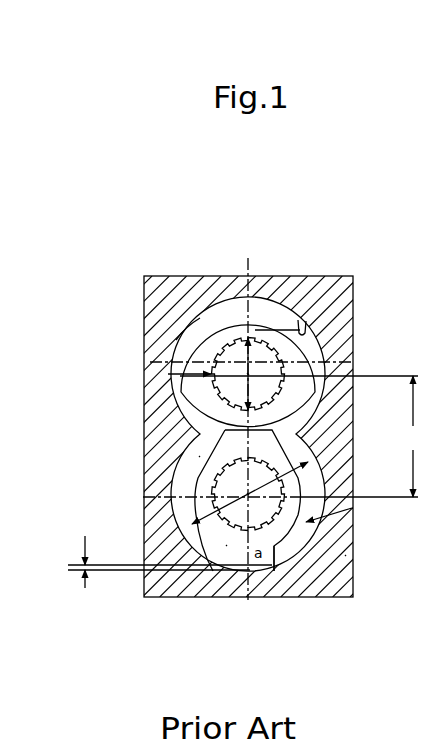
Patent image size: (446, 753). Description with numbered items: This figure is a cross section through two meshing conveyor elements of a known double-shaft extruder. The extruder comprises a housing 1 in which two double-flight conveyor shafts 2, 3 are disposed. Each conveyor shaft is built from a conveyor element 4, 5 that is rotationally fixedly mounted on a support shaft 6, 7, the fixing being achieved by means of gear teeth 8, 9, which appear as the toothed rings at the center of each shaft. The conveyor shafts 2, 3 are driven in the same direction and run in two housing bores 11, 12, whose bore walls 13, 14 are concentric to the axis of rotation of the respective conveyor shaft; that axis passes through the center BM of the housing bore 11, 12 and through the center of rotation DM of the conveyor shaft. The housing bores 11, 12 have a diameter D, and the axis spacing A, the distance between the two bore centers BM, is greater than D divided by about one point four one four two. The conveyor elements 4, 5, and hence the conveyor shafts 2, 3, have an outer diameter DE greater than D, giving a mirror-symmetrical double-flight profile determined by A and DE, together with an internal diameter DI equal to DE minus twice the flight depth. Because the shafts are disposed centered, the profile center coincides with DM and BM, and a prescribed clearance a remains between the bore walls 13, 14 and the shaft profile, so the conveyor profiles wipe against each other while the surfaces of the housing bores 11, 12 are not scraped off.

The housing 1 is at (337, 303).
The conveyor shaft 2 is at (262, 340).
The conveyor shaft 3 is at (300, 540).
The conveyor element 4 is at (224, 318).
The conveyor element 5 is at (283, 545).
The support shaft 6 is at (317, 360).
The support shaft 7 is at (302, 545).
The gear teeth 8 is at (249, 327).
The gear teeth 9 is at (226, 545).
The housing bore 11 is at (210, 320).
The housing bore 12 is at (352, 508).
The bore wall 13 is at (306, 322).
The bore wall 14 is at (335, 510).
The axis spacing A is at (410, 436).
The clearance a is at (167, 562).
The diameter of the housing bores D is at (172, 505).
The outer diameter DE is at (168, 374).
The internal diameter DI is at (200, 455).
The center of rotation DM is at (248, 374).
The center of the housing bore BM is at (248, 494).